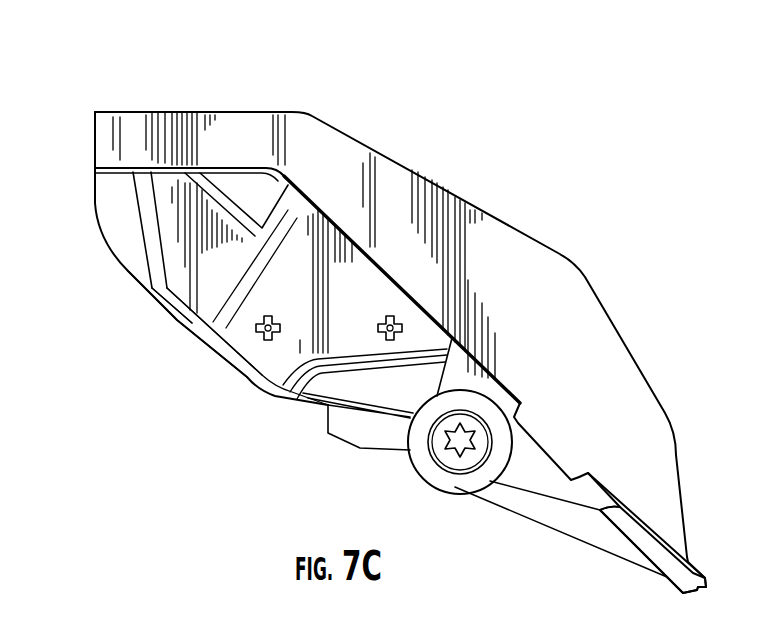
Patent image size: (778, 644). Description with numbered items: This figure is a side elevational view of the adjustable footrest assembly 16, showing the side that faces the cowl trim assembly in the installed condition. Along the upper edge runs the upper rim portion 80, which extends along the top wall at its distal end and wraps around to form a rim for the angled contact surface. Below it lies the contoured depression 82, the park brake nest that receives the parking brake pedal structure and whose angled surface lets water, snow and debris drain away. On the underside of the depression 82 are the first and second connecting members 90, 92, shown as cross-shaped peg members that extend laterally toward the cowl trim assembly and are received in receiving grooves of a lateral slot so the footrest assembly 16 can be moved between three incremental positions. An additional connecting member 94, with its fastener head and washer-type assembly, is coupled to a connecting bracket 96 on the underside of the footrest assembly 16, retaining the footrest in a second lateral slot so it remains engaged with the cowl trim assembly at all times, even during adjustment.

The footrest assembly 16 is at (133, 90).
The upper rim portion 80 is at (248, 125).
The contoured depression 82 is at (187, 313).
The first connecting member 90 is at (267, 340).
The second connecting member 92 is at (397, 323).
The connecting member 94 is at (467, 458).
The connecting bracket 96 is at (540, 478).